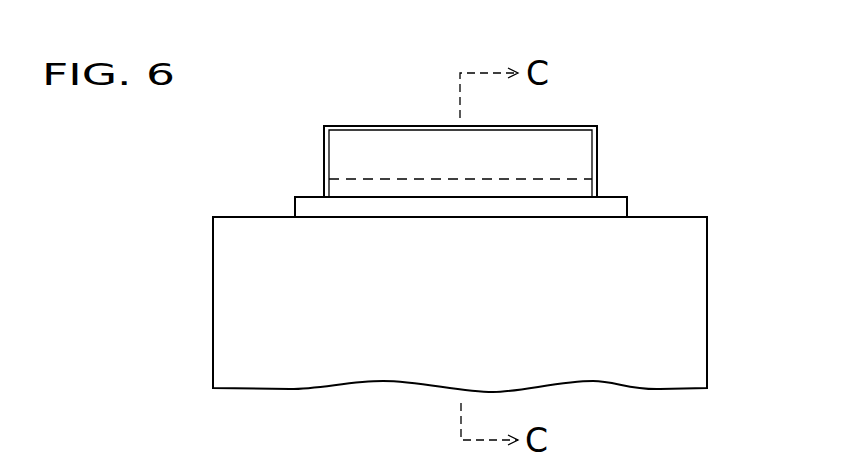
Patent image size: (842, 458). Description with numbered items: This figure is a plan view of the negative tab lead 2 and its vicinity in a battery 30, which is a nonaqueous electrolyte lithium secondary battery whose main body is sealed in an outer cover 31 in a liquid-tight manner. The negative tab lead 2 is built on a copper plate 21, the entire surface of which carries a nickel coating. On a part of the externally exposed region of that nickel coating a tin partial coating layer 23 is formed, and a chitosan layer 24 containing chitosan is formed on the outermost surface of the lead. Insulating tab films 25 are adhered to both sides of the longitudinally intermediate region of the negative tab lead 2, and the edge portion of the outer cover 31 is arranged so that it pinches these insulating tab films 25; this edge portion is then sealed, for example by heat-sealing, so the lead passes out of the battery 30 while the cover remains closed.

The negative tab lead 2 is at (563, 138).
The copper plate 21 is at (340, 188).
The tin partial coating layer 23 is at (350, 145).
The chitosan layer 24 is at (398, 157).
The insulating tab film 25 is at (300, 208).
The battery 30 is at (677, 148).
The outer cover 31 is at (245, 283).